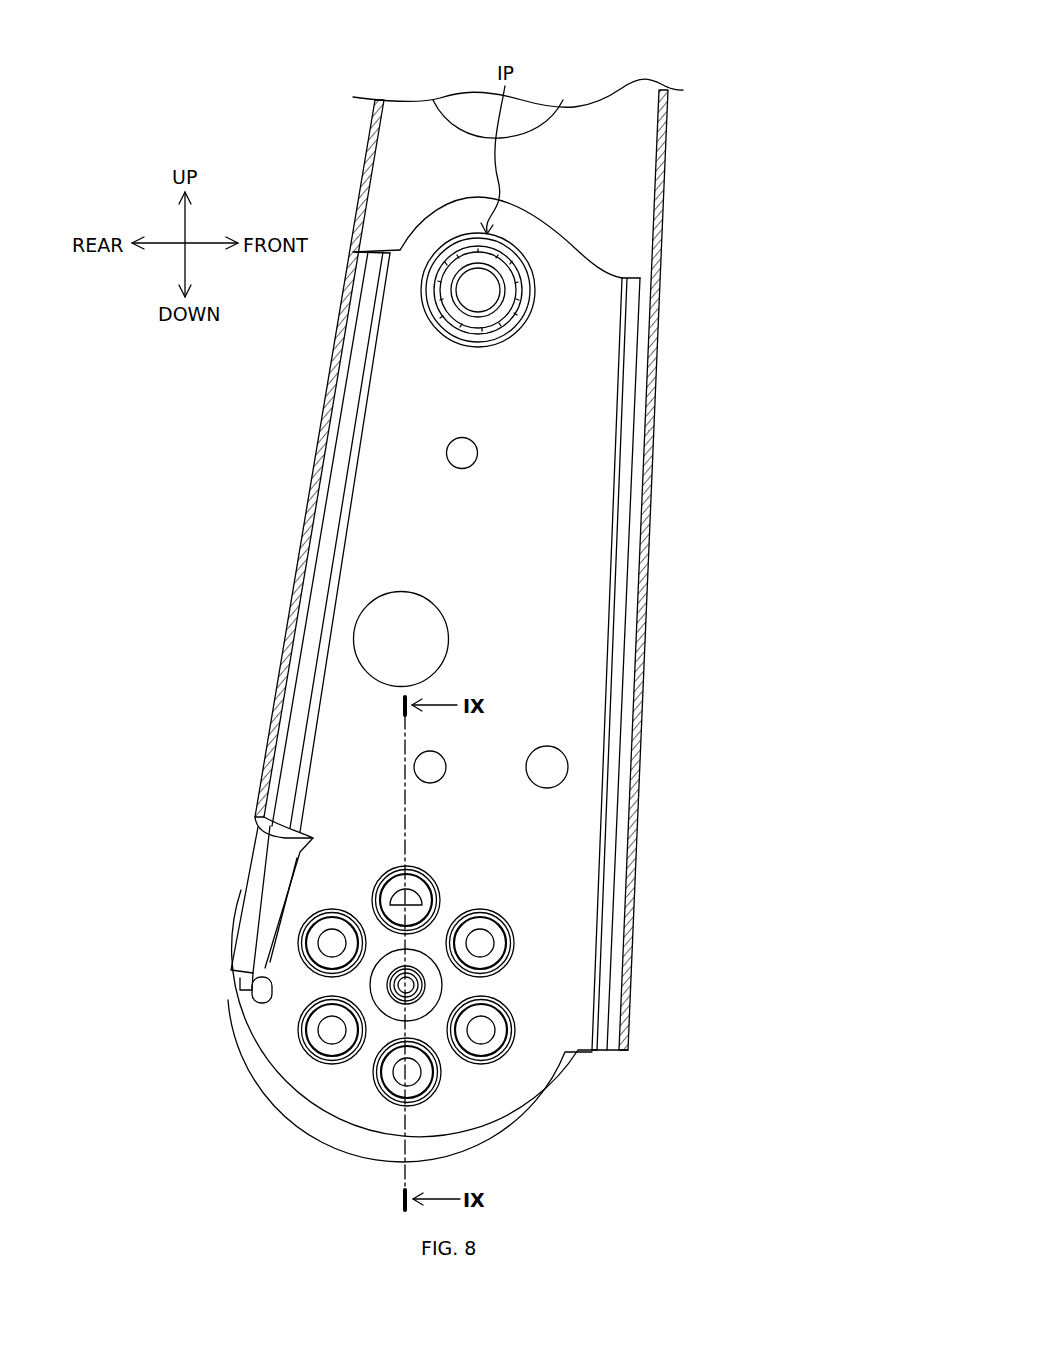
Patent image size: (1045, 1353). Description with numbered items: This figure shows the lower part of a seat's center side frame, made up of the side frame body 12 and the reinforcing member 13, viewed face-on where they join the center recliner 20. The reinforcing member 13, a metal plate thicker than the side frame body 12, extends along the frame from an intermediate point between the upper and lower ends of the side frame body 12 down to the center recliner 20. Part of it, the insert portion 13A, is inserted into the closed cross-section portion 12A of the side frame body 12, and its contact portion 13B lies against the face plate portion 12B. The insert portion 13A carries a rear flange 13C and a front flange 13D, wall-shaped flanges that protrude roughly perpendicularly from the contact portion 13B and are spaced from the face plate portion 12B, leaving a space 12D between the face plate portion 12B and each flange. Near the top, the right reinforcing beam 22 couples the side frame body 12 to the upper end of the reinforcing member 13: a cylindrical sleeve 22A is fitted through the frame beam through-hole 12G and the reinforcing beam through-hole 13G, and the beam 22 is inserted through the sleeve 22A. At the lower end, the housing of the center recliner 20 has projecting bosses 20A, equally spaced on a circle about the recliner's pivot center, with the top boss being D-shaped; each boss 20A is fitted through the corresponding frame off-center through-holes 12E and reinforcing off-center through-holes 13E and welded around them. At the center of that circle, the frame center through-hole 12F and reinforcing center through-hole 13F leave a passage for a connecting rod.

The side frame body 12 is at (666, 152).
The closed cross-section portion 12A is at (319, 469).
The face plate portion 12B is at (632, 219).
The space 12D is at (307, 603).
The frame off-center through-holes 12E is at (423, 913).
The frame center through-hole 12F is at (385, 1004).
The frame beam through-hole 12G is at (518, 318).
The reinforcing member 13 is at (570, 446).
The insert portion 13A is at (461, 613).
The contact portion 13B is at (578, 500).
The rear flange 13C is at (322, 578).
The front flange 13D is at (620, 626).
The reinforcing off-center through-holes 13E is at (450, 1029).
The reinforcing center through-hole 13F is at (339, 1085).
The reinforcing beam through-hole 13G is at (512, 338).
The center recliner 20 is at (577, 1086).
The bosses 20A is at (412, 898).
The right reinforcing beam 22 is at (520, 285).
The cylindrical sleeve 22A is at (522, 262).